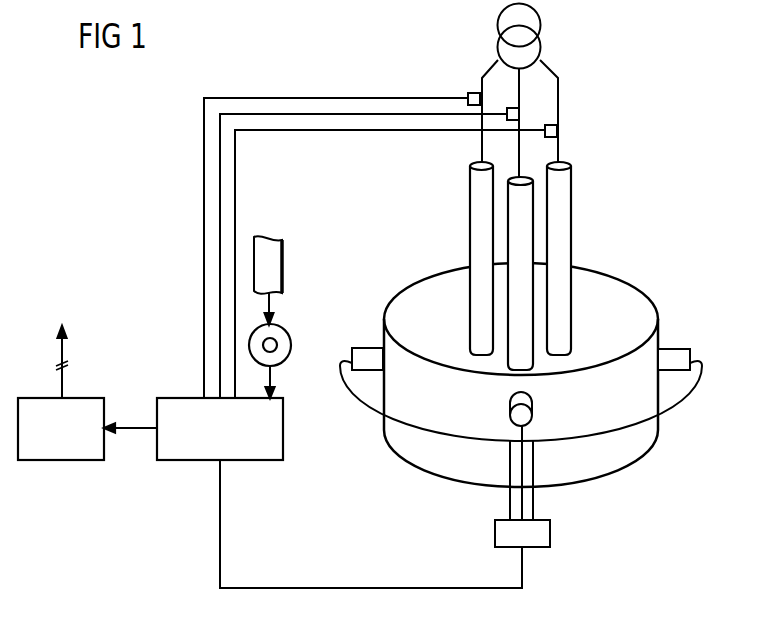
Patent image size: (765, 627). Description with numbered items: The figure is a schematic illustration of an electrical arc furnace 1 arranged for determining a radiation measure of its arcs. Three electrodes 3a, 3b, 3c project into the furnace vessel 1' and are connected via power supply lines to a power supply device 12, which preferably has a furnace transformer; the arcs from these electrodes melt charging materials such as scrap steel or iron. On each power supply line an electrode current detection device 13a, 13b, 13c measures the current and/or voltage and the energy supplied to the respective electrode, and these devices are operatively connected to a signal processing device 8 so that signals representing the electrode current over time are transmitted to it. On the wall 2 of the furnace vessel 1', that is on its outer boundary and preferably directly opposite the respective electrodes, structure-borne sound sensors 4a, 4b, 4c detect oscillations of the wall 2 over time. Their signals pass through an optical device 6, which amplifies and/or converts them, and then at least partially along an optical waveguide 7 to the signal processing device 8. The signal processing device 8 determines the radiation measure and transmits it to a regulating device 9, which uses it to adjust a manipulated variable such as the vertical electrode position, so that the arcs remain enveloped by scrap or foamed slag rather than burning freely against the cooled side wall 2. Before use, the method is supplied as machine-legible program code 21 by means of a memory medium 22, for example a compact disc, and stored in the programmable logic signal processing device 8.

The electrical arc furnace 1 is at (527, 313).
The furnace vessel 1' is at (534, 307).
The wall 2 is at (620, 455).
The electrode 3a is at (470, 192).
The electrode 3b is at (572, 192).
The electrode 3c is at (513, 211).
The structure-borne sound sensor 4a is at (366, 348).
The structure-borne sound sensor 4b is at (677, 349).
The structure-borne sound sensor 4c is at (535, 402).
The optical device 6 is at (551, 535).
The optical waveguide 7 is at (369, 586).
The signal processing device 8 is at (197, 461).
The regulating device 9 is at (62, 461).
The power supply device 12 is at (541, 46).
The electrode current detection device 13a is at (472, 92).
The electrode current detection device 13b is at (557, 131).
The electrode current detection device 13c is at (519, 113).
The machine-legible program code 21 is at (283, 246).
The memory medium 22 is at (287, 330).